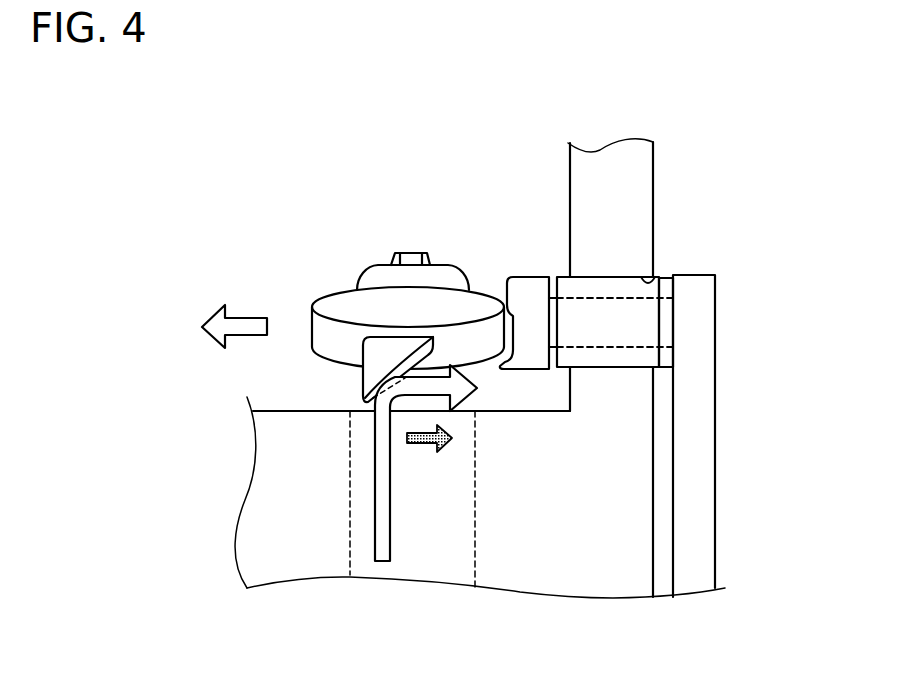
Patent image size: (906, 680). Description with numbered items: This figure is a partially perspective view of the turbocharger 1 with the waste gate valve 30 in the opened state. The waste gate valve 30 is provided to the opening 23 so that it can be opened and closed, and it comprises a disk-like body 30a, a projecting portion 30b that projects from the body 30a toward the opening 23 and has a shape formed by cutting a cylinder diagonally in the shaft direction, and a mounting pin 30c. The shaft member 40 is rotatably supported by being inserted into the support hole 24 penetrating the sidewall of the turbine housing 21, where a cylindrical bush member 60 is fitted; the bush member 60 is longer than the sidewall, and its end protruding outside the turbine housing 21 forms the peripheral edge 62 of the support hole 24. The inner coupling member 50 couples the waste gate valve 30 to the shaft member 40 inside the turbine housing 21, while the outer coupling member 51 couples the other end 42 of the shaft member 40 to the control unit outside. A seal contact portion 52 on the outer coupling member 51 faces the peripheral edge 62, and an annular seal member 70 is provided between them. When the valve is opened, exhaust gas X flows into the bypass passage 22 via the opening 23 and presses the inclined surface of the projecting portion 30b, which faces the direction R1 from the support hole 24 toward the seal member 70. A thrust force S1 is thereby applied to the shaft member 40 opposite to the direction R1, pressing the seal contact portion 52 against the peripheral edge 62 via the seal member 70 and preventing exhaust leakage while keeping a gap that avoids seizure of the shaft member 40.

The turbocharger 1 is at (603, 113).
The turbine housing 21 is at (637, 158).
The bypass passage 22 is at (515, 165).
The opening 23 is at (458, 525).
The support hole 24 is at (583, 277).
The waste gate valve 30 is at (424, 160).
The body 30a is at (328, 313).
The projecting portion 30b is at (373, 358).
The mounting pin 30c is at (410, 250).
The shaft member 40 is at (633, 318).
The other end 42 is at (675, 338).
The inner coupling member 50 is at (520, 290).
The outer coupling member 51 is at (705, 540).
The seal contact portion 52 is at (673, 297).
The bush member 60 is at (617, 278).
The peripheral edge 62 is at (643, 275).
The seal member 70 is at (665, 277).
The exhaust gas X is at (382, 550).
The direction R1 is at (420, 443).
The thrust force S1 is at (217, 325).